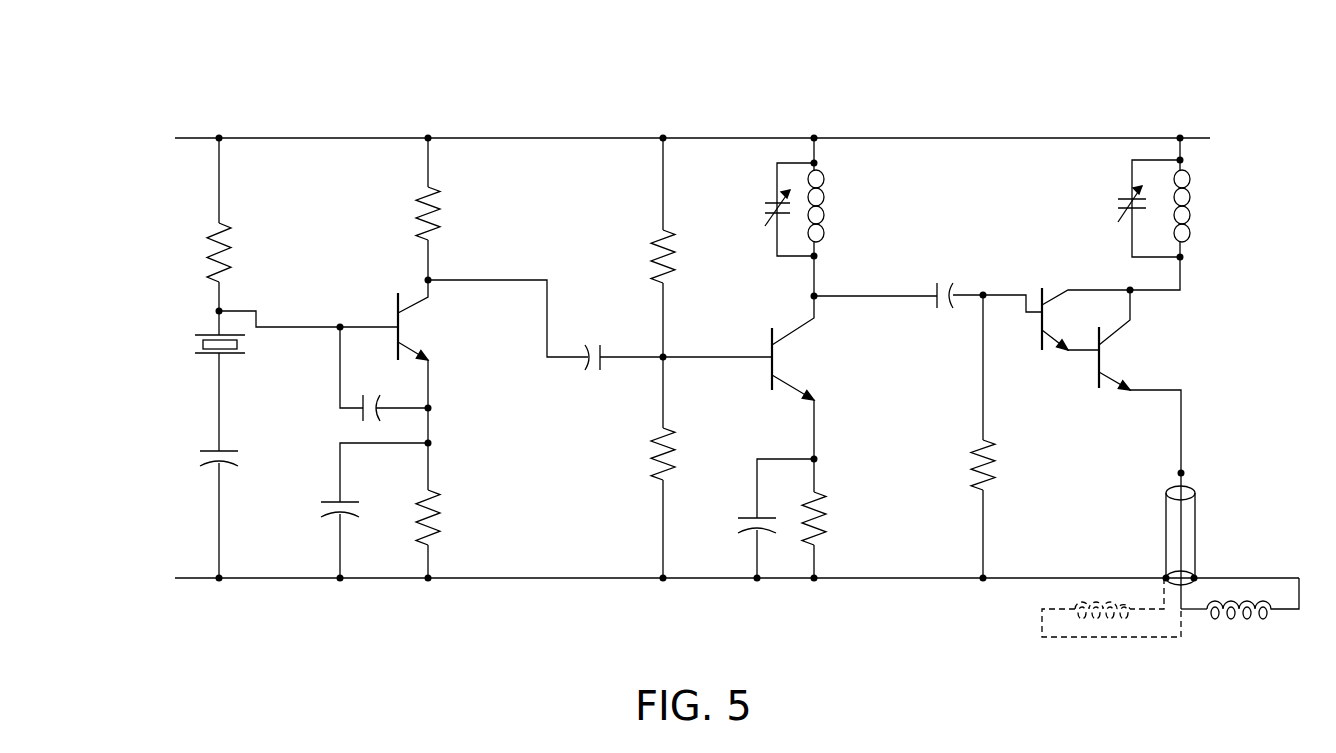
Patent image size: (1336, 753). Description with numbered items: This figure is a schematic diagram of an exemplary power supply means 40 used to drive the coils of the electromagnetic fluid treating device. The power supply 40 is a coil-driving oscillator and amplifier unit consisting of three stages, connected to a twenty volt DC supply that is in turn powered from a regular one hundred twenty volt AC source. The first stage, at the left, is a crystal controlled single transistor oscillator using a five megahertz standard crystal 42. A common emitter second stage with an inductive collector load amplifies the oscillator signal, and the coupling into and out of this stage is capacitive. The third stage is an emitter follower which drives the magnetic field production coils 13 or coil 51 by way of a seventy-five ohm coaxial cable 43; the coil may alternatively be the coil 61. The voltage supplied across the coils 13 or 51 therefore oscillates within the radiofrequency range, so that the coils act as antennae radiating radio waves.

The power supply means 40 is at (725, 133).
The standard crystal 42 is at (202, 357).
The coaxial cable 43 is at (1195, 534).
The coils 13 is at (1085, 620).
The coil 51 is at (1244, 629).
The coil 61 is at (1225, 617).